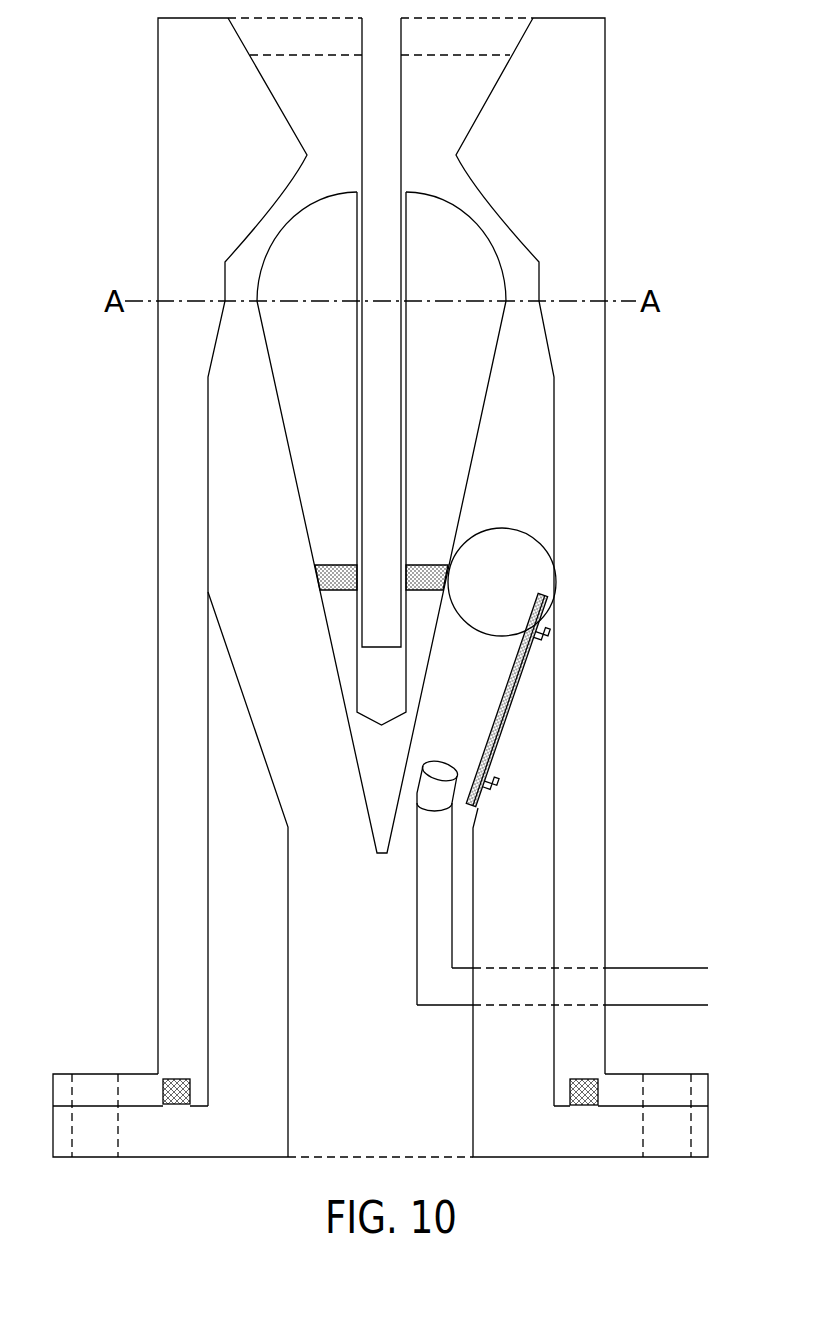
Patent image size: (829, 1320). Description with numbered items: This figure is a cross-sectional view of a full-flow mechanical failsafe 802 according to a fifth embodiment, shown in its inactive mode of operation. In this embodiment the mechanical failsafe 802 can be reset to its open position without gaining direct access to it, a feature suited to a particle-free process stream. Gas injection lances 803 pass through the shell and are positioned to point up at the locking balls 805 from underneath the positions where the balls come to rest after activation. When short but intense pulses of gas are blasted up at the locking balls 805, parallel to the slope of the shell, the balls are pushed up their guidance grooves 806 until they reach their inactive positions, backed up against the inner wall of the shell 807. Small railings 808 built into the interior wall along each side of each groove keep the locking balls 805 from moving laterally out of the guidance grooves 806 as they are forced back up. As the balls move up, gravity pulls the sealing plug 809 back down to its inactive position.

The mechanical failsafe 802 is at (303, 432).
The gas injection lances 803 is at (432, 861).
The locking balls 805 is at (515, 547).
The guidance grooves 806 is at (530, 714).
The inner wall of the shell 807 is at (565, 580).
The railings 808 is at (495, 745).
The sealing plug 809 is at (463, 265).